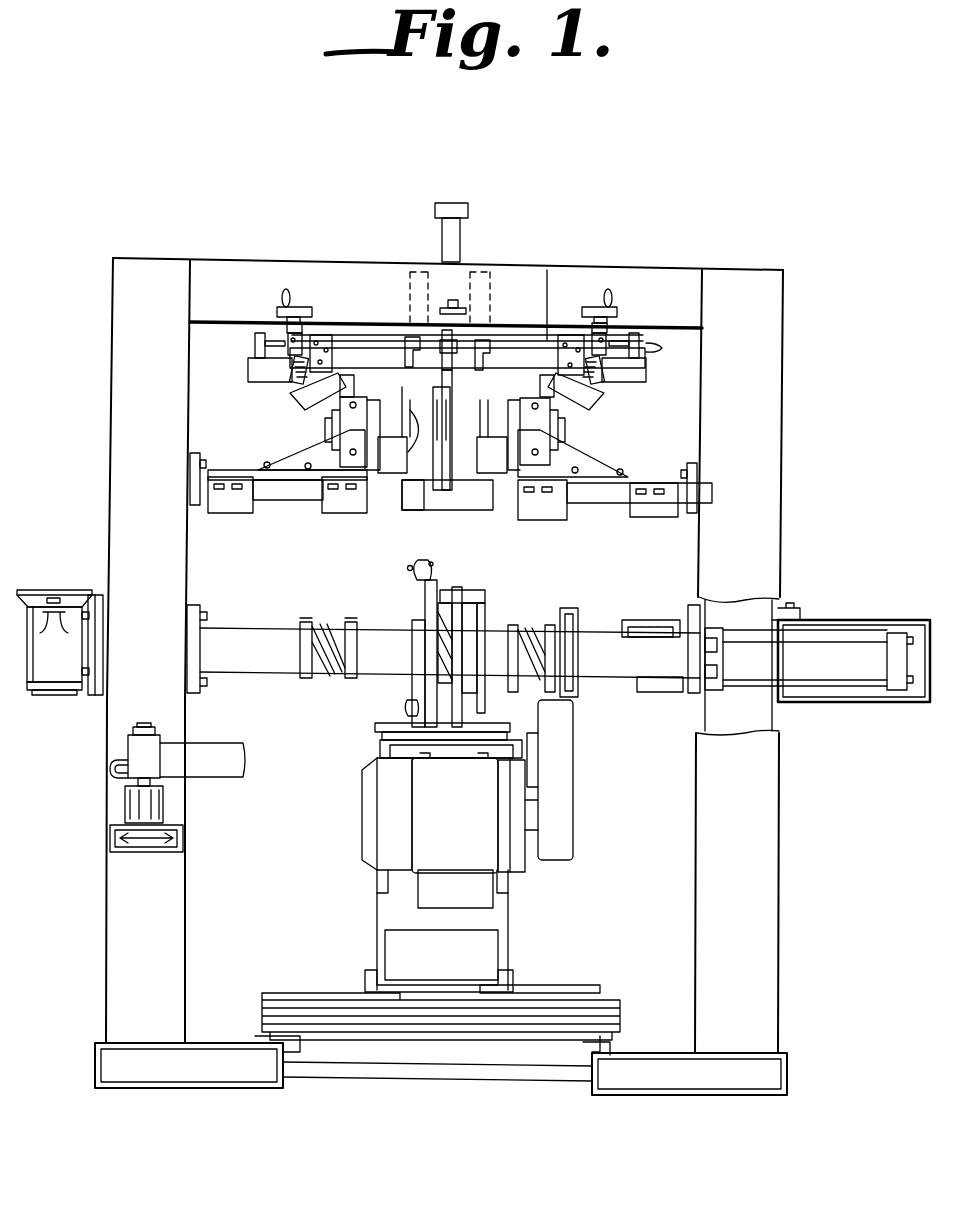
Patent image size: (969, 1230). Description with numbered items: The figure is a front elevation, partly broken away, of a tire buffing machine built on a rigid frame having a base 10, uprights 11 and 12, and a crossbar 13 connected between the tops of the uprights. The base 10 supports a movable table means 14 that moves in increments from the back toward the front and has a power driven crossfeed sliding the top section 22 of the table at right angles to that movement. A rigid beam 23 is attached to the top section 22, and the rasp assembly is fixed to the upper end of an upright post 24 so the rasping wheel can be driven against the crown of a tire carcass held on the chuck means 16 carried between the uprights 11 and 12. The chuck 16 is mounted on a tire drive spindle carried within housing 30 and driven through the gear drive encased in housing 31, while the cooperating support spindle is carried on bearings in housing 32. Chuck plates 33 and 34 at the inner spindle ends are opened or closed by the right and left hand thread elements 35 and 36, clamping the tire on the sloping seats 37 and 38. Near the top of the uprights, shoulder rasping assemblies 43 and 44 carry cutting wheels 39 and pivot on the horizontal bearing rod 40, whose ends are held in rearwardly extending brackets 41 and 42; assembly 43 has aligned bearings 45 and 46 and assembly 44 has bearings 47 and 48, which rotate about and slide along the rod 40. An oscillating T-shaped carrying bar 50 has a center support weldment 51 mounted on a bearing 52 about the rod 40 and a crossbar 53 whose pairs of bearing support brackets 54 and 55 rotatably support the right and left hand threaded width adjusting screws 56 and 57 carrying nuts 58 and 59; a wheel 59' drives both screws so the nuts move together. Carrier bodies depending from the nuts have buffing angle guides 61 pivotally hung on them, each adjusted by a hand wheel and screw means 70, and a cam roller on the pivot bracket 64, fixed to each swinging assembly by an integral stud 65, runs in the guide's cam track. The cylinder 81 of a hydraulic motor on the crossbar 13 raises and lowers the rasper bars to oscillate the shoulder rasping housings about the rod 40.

The base 10 is at (198, 1060).
The upright 11 is at (124, 391).
The upright 12 is at (770, 452).
The crossbar 13 is at (560, 280).
The movable table means 14 is at (588, 986).
The chuck means 16 is at (500, 648).
The top section of the table 22 is at (612, 998).
The rigid beam 23 is at (478, 952).
The upright post 24 is at (432, 845).
The spindle housing 30 is at (258, 640).
The gear drive housing 31 is at (57, 672).
The bearing housing 32 is at (677, 610).
The chuck plate 33 is at (425, 600).
The chuck plate 34 is at (470, 600).
The right hand thread element 35 is at (340, 670).
The left hand thread element 36 is at (548, 665).
The sloping seat 37 is at (432, 578).
The sloping seat 38 is at (442, 600).
The cutting wheel 39 is at (441, 445).
The bearing rod 40 is at (290, 500).
The bracket 41 is at (198, 453).
The bracket 42 is at (690, 463).
The shoulder rasping assembly 43 is at (296, 460).
The shoulder rasping assembly 44 is at (582, 462).
The bearing 45 is at (236, 500).
The bearing 46 is at (340, 500).
The bearing 47 is at (548, 500).
The bearing 48 is at (655, 500).
The T-shaped carrying bar 50 is at (456, 514).
The center support weldment 51 is at (437, 506).
The bearing 52 is at (405, 500).
The crossbar of the T 53 is at (252, 370).
The bearing support brackets 54 is at (262, 333).
The bearing support brackets 55 is at (636, 345).
The width adjusting screw 56 is at (353, 348).
The width adjusting screw 57 is at (498, 345).
The threaded nut 58 is at (322, 335).
The threaded nut 59 is at (582, 326).
The wheel 59' is at (748, 343).
The buffing angle guide 61 is at (297, 396).
The pivot bracket 64 is at (541, 284).
The stud element 65 is at (348, 383).
The hand wheel and screw means 70 is at (290, 308).
The cylinder 81 is at (465, 258).